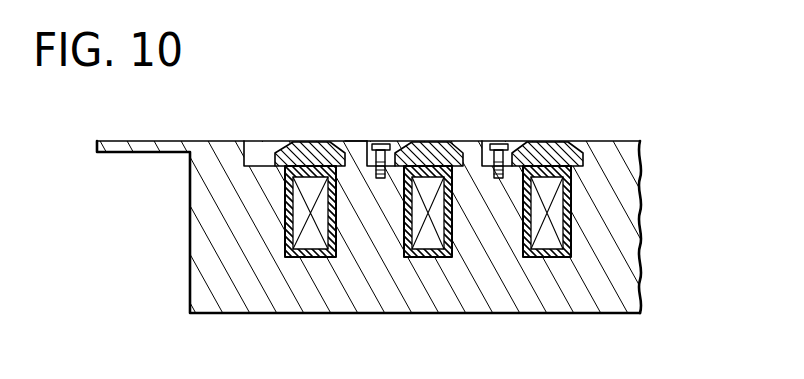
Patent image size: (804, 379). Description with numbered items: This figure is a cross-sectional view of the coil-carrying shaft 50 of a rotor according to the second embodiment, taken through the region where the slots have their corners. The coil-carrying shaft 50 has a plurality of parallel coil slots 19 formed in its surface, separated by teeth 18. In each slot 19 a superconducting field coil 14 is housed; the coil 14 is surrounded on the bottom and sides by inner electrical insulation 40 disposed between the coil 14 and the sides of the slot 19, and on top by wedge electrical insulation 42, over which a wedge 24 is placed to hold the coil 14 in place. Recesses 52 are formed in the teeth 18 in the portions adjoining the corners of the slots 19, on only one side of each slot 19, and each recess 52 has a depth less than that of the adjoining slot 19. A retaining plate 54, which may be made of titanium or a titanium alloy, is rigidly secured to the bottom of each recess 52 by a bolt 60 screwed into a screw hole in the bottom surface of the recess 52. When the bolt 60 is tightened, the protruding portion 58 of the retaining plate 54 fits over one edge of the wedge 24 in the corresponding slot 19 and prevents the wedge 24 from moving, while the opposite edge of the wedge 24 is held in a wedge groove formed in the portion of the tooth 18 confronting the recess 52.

The superconducting field coil 14 is at (320, 217).
The tooth 18 is at (373, 212).
The coil slot 19 is at (285, 232).
The wedge 24 is at (430, 116).
The inner electrical insulation 40 is at (338, 285).
The wedge electrical insulation 42 is at (287, 142).
The coil-carrying shaft 50 is at (610, 248).
The recess 52 is at (250, 142).
The retaining plate 54 is at (355, 145).
The protruding portion 58 is at (405, 142).
The bolt 60 is at (379, 142).